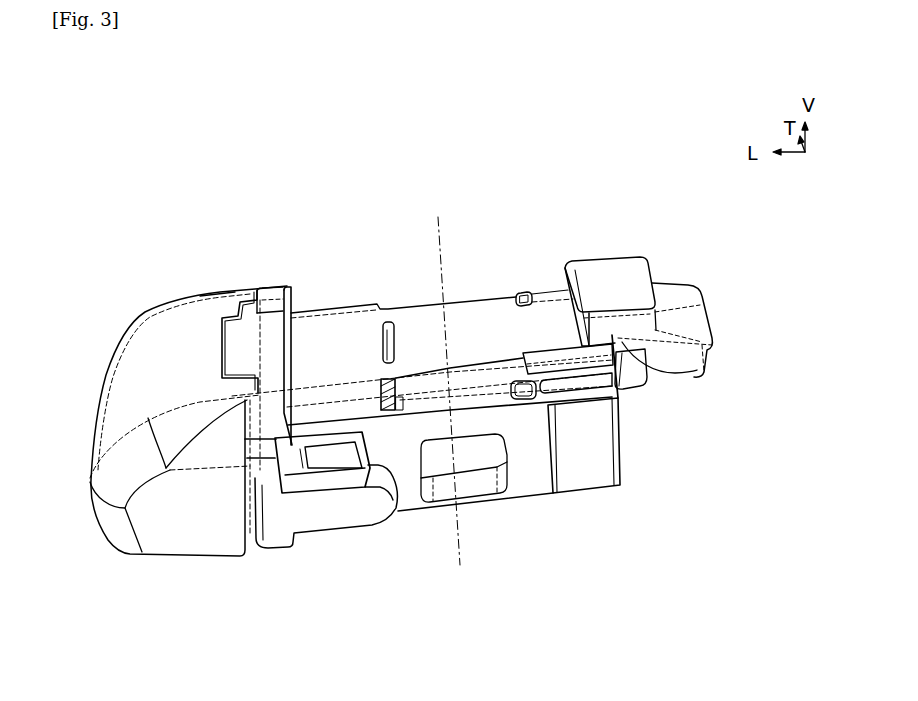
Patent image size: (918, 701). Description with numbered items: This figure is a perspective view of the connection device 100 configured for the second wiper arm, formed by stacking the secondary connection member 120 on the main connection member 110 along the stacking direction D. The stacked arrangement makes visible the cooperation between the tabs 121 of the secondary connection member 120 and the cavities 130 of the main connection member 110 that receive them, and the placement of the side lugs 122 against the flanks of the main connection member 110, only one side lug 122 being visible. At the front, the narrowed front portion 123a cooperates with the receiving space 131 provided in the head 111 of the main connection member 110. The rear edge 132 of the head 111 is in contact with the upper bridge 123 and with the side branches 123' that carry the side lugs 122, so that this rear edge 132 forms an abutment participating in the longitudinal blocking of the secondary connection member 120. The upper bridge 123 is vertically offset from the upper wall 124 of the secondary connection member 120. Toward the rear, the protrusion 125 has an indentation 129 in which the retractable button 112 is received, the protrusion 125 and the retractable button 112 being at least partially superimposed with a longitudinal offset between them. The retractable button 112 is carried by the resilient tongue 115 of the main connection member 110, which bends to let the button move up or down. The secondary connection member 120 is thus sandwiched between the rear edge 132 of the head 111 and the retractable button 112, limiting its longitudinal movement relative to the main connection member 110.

The connection device 100 is at (567, 583).
The main connection member 110 is at (154, 282).
The head 111 is at (132, 338).
The retractable button 112 is at (683, 286).
The resilient tongue 115 is at (630, 346).
The secondary connection member 120 is at (343, 279).
The tabs 121 is at (320, 438).
The side lugs 122 is at (330, 527).
The upper bridge 123 is at (242, 296).
The narrowed front portion 123a is at (254, 308).
The side branches 123' is at (149, 416).
The upper wall 124 is at (481, 300).
The protrusion 125 is at (613, 262).
The indentation 129 is at (697, 372).
The cavities 130 is at (392, 378).
The receiving space 131 is at (203, 298).
The rear edge 132 is at (262, 484).
The stacking direction D is at (440, 240).